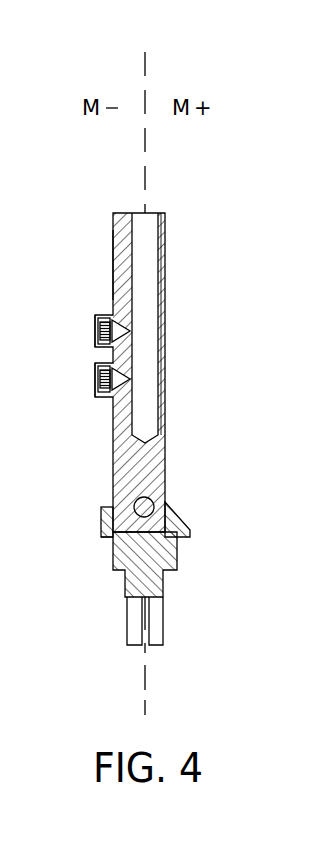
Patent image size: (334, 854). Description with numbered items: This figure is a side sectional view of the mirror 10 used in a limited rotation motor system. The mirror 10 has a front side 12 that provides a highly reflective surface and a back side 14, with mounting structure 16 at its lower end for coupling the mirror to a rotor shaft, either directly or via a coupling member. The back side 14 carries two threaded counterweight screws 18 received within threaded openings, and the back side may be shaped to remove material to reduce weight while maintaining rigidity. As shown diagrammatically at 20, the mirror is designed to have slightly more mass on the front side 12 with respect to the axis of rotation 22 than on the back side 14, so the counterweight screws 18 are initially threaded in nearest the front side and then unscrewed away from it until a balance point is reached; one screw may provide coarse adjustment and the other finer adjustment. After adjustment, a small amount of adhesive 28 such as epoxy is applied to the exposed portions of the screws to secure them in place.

The mirror 10 is at (242, 182).
The front side 12 is at (165, 362).
The back side 14 is at (113, 262).
The mounting structure 16 is at (157, 623).
The threaded counterweight screws 18 is at (95, 340).
The mass distribution diagram 20 is at (182, 42).
The axis of rotation 22 is at (145, 76).
The adhesive 28 is at (95, 322).